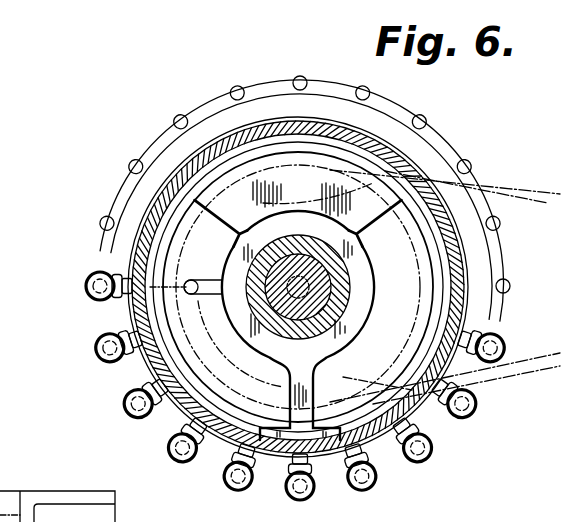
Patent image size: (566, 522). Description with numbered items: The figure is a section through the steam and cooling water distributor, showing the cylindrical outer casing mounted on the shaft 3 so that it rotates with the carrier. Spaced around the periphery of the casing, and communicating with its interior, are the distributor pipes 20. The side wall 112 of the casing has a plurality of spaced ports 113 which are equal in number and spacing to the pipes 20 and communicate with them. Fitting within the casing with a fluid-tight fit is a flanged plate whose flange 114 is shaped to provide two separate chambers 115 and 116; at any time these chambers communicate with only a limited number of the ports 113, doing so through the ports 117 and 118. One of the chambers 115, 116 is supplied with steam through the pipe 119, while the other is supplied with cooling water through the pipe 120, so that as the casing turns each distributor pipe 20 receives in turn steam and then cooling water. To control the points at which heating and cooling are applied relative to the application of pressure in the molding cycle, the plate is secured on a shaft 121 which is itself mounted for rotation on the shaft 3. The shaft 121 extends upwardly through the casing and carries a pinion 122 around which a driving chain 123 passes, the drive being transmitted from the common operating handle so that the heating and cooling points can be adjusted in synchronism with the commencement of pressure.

The shaft 3 is at (282, 232).
The shaft 121 is at (308, 237).
The pinion 122 is at (383, 181).
The driving chain 123 is at (483, 177).
The chamber 116 is at (233, 364).
The chamber 115 is at (420, 360).
The port 118 is at (238, 420).
The port 117 is at (365, 418).
The flange 114 is at (152, 205).
The pipe 119 is at (463, 255).
The side wall 112 is at (147, 220).
The distributor pipes 20 is at (173, 447).
The ports 113 is at (133, 326).
The pipe 120 is at (147, 364).